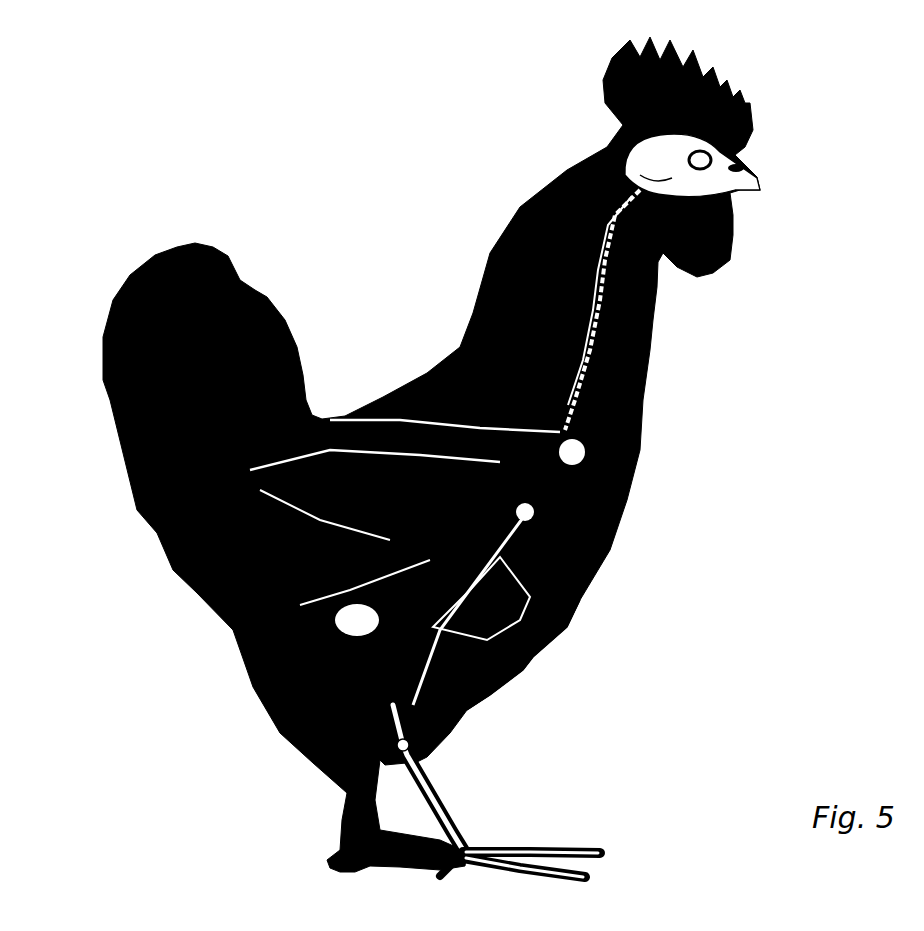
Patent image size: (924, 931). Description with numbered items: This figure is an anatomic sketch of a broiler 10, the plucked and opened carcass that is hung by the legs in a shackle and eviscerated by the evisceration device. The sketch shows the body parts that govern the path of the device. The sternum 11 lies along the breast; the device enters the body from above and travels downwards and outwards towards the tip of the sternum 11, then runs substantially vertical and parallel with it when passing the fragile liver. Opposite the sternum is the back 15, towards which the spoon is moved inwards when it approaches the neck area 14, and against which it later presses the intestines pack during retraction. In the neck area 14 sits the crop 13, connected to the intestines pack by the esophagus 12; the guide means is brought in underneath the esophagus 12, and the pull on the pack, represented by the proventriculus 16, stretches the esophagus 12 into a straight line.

The broiler 10 is at (645, 540).
The sternum 11 is at (520, 660).
The esophagus 12 is at (657, 300).
The crop 13 is at (640, 447).
The neck area 14 is at (647, 380).
The back 15 is at (413, 383).
The proventriculus 16 is at (603, 560).